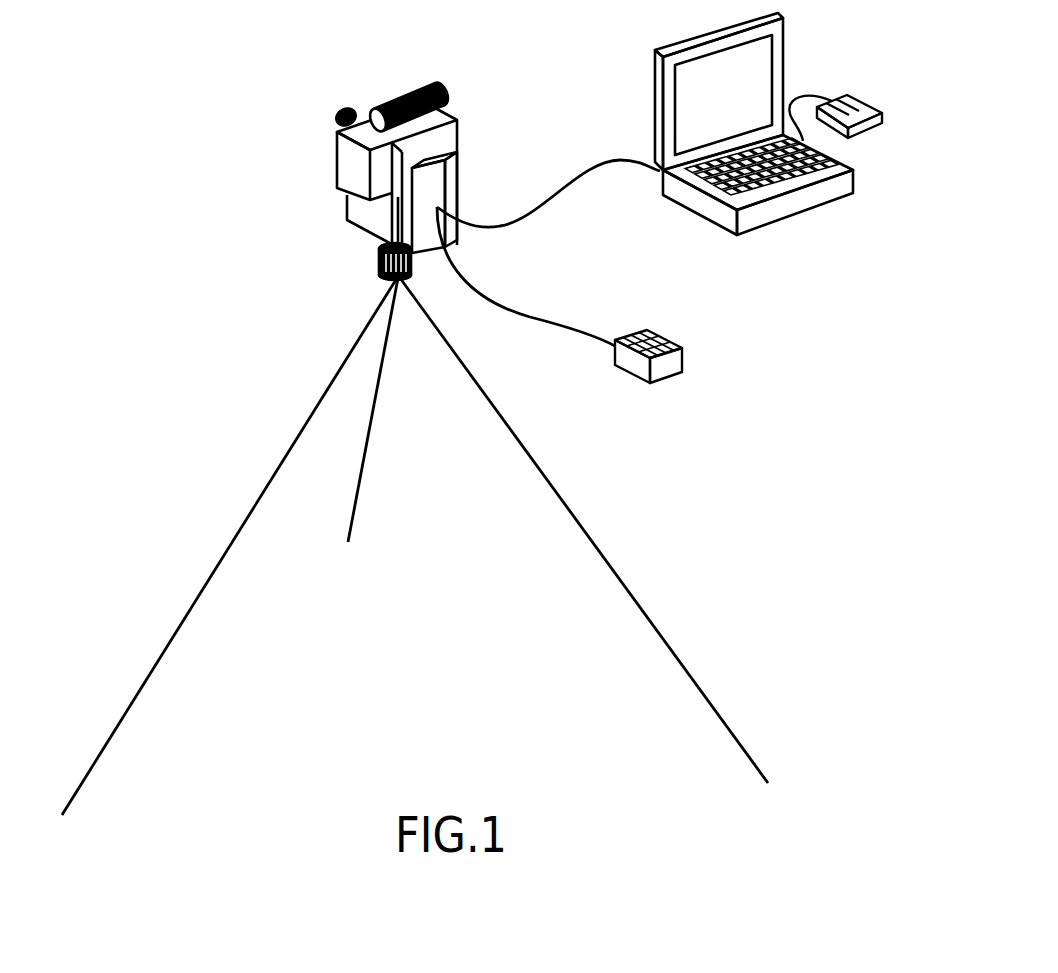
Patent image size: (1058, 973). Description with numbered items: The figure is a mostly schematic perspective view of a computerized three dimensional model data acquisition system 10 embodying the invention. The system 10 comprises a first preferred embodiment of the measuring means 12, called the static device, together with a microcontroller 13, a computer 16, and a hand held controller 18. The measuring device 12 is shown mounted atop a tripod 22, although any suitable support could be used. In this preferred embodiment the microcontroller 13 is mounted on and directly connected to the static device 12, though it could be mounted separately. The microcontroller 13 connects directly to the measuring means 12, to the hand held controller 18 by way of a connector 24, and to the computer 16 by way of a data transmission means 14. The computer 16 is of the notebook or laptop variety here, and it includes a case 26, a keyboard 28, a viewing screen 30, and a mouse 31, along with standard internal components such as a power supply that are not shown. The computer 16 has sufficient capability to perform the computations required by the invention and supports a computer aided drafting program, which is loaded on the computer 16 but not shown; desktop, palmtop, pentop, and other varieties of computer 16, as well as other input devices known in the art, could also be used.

The computerized three dimensional model data acquisition system 10 is at (785, 596).
The measuring means 12 is at (332, 180).
The microcontroller 13 is at (443, 182).
The data transmission means 14 is at (523, 220).
The computer 16 is at (794, 158).
The hand held controller 18 is at (668, 363).
The tripod 22 is at (168, 642).
The connector 24 is at (478, 298).
The case 26 is at (820, 202).
The keyboard 28 is at (840, 165).
The viewing screen 30 is at (758, 75).
The mouse 31 is at (882, 114).